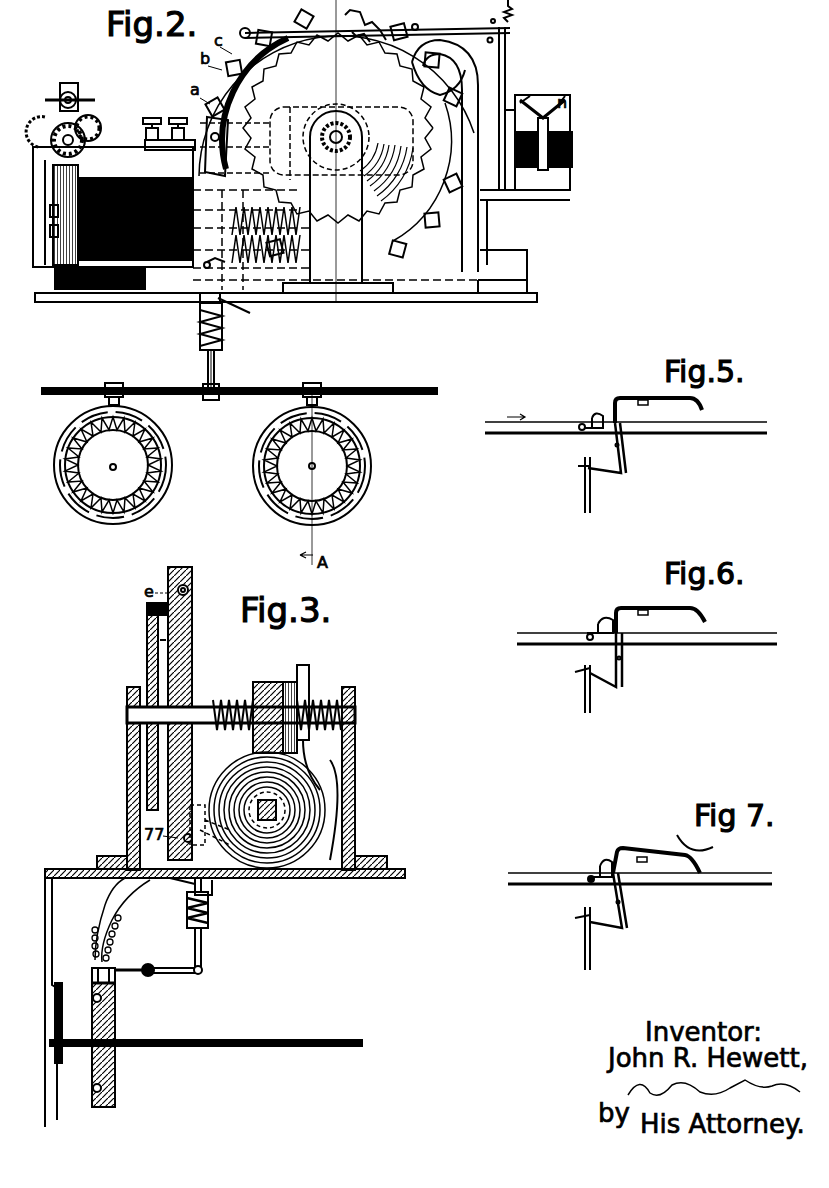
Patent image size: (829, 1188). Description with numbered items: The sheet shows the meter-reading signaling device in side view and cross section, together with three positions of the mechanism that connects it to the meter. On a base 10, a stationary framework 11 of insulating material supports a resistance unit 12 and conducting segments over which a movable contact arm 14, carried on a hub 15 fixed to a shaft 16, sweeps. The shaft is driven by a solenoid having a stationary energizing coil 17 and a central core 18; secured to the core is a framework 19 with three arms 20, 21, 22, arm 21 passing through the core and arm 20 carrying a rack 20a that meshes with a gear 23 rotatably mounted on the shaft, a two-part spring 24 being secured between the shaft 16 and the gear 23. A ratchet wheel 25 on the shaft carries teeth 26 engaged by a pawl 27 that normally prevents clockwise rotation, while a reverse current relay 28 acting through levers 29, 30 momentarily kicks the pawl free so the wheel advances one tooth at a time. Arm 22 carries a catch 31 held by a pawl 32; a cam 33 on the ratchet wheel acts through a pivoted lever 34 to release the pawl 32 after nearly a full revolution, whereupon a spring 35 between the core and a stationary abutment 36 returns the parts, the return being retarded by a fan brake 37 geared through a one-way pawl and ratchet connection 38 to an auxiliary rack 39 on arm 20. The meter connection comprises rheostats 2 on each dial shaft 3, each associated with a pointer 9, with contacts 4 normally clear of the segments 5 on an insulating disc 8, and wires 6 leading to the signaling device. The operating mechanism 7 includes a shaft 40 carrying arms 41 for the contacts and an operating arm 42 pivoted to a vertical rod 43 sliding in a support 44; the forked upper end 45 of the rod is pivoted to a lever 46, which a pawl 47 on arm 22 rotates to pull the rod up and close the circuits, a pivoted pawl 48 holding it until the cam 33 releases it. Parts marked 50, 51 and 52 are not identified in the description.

In FIG. 2, the rheostat 2 is at (113, 510).
In FIG. 3, the rheostat 2 is at (93, 999).
In FIG. 2, the dial shaft 3 is at (110, 467).
In FIG. 3, the dial shaft 3 is at (218, 1040).
In FIG. 3, the contact 4 is at (110, 970).
In FIG. 3, the conducting segment 5 is at (92, 983).
In FIG. 3, the electric wire 6 is at (120, 928).
In FIG. 2, the operating mechanism 7 is at (203, 368).
In FIG. 3, the operating mechanism 7 is at (189, 937).
In FIG. 2, the disc 8 is at (95, 480).
In FIG. 3, the disc 8 is at (115, 1013).
In FIG. 3, the dial indicator 9 is at (50, 1015).
In FIG. 2, the base 10 is at (415, 296).
In FIG. 3, the base 10 is at (387, 878).
In FIG. 3, the stationary framework 11 is at (192, 574).
In FIG. 3, the resistance unit 12 is at (190, 593).
In FIG. 2, the contact arm 14 is at (207, 120).
In FIG. 2, the hub 15 is at (372, 137).
In FIG. 3, the hub 15 is at (160, 690).
In FIG. 2, the shaft 16 is at (370, 148).
In FIG. 3, the shaft 16 is at (190, 707).
In FIG. 2, the energizing coil 17 is at (112, 180).
In FIG. 3, the energizing coil 17 is at (335, 812).
In FIG. 2, the core 18 is at (50, 210).
In FIG. 3, the core 18 is at (318, 830).
In FIG. 2, the framework 19 is at (44, 184).
In FIG. 2, the arm 20 is at (40, 153).
In FIG. 2, the rack 20a is at (392, 104).
In FIG. 3, the rack 20a is at (259, 707).
In FIG. 2, the arm 21 is at (50, 231).
In FIG. 3, the arm 21 is at (258, 805).
In FIG. 2, the arm 22 is at (44, 262).
In FIG. 5, the arm 22 is at (531, 430).
In FIG. 6, the arm 22 is at (712, 638).
In FIG. 7, the arm 22 is at (720, 878).
In FIG. 2, the gear 23 is at (352, 112).
In FIG. 3, the gear 23 is at (280, 682).
In FIG. 3, the two-part spring 24 is at (225, 703).
In FIG. 2, the ratchet wheel 25 is at (338, 128).
In FIG. 3, the ratchet wheel 25 is at (140, 712).
In FIG. 2, the teeth 26 is at (358, 45).
In FIG. 2, the pawl 27 is at (246, 19).
In FIG. 3, the pawl 27 is at (147, 610).
In FIG. 2, the reverse current relay 28 is at (570, 104).
In FIG. 2, the lever 29 is at (506, 58).
In FIG. 2, the lever 30 is at (462, 20).
In FIG. 2, the catch 31 is at (490, 270).
In FIG. 2, the pawl 32 is at (496, 252).
In FIG. 2, the cam 33 is at (410, 80).
In FIG. 7, the cam 33 is at (677, 835).
In FIG. 2, the pivoted lever 34 is at (458, 70).
In FIG. 2, the spring 35 is at (266, 206).
In FIG. 2, the stationary abutment 36 is at (308, 193).
In FIG. 2, the fan brake 37 is at (78, 93).
In FIG. 3, the fan brake 37 is at (302, 665).
In FIG. 2, the one-way pawl and ratchet driving connection 38 is at (56, 125).
In FIG. 2, the auxiliary rack 39 is at (40, 140).
In FIG. 2, the shaft 40 is at (368, 382).
In FIG. 2, the arm 41 is at (116, 383).
In FIG. 3, the arm 41 is at (138, 973).
In FIG. 3, the operating arm 42 is at (182, 973).
In FIG. 2, the vertical rod 43 is at (215, 356).
In FIG. 3, the vertical rod 43 is at (202, 948).
In FIG. 5, the vertical rod 43 is at (585, 494).
In FIG. 6, the vertical rod 43 is at (585, 700).
In FIG. 7, the vertical rod 43 is at (585, 954).
In FIG. 2, the support 44 is at (200, 338).
In FIG. 3, the support 44 is at (208, 908).
In FIG. 2, the fork 45 is at (205, 303).
In FIG. 3, the fork 45 is at (170, 880).
In FIG. 2, the lever 46 is at (245, 310).
In FIG. 3, the lever 46 is at (195, 888).
In FIG. 5, the lever 46 is at (622, 460).
In FIG. 6, the lever 46 is at (622, 672).
In FIG. 7, the lever 46 is at (626, 918).
In FIG. 2, the pawl 47 is at (210, 271).
In FIG. 5, the pawl 47 is at (594, 418).
In FIG. 6, the pawl 47 is at (602, 628).
In FIG. 7, the pawl 47 is at (600, 866).
In FIG. 5, the pivoted pawl 48 is at (627, 398).
In FIG. 6, the pivoted pawl 48 is at (634, 608).
In FIG. 7, the pivoted pawl 48 is at (630, 848).
In FIG. 2, the spring 50 is at (496, 11).
In FIG. 2, the terminal 51 is at (160, 128).
In FIG. 2, the terminal plate 52 is at (158, 150).